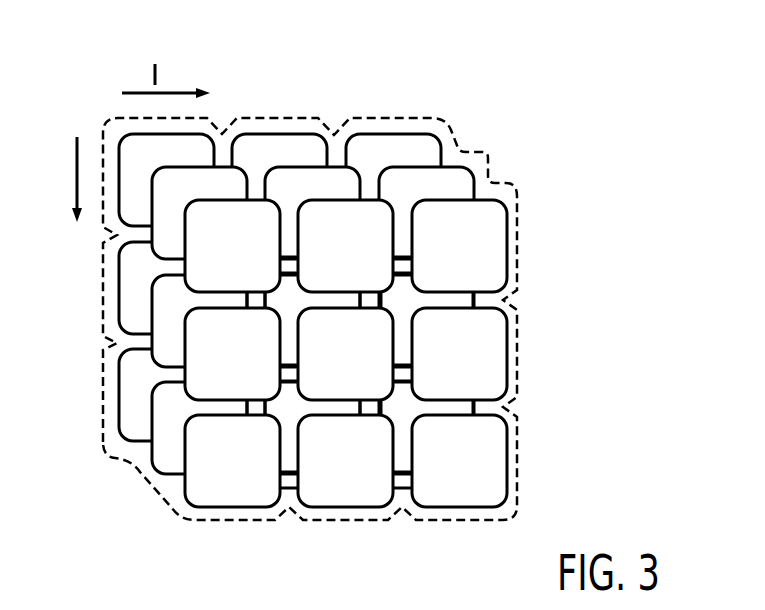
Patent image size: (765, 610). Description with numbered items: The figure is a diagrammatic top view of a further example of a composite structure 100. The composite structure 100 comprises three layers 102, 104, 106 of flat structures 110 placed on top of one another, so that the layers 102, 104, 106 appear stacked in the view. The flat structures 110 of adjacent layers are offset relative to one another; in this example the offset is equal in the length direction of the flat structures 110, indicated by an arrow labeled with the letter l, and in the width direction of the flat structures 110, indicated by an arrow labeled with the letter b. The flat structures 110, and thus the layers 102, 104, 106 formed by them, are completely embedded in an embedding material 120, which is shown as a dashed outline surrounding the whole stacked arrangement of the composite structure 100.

The composite structure 100 is at (336, 322).
The layer 102 is at (505, 243).
The layer 104 is at (476, 182).
The layer 106 is at (444, 152).
The flat structure 110 is at (488, 353).
The embedding material 120 is at (520, 462).